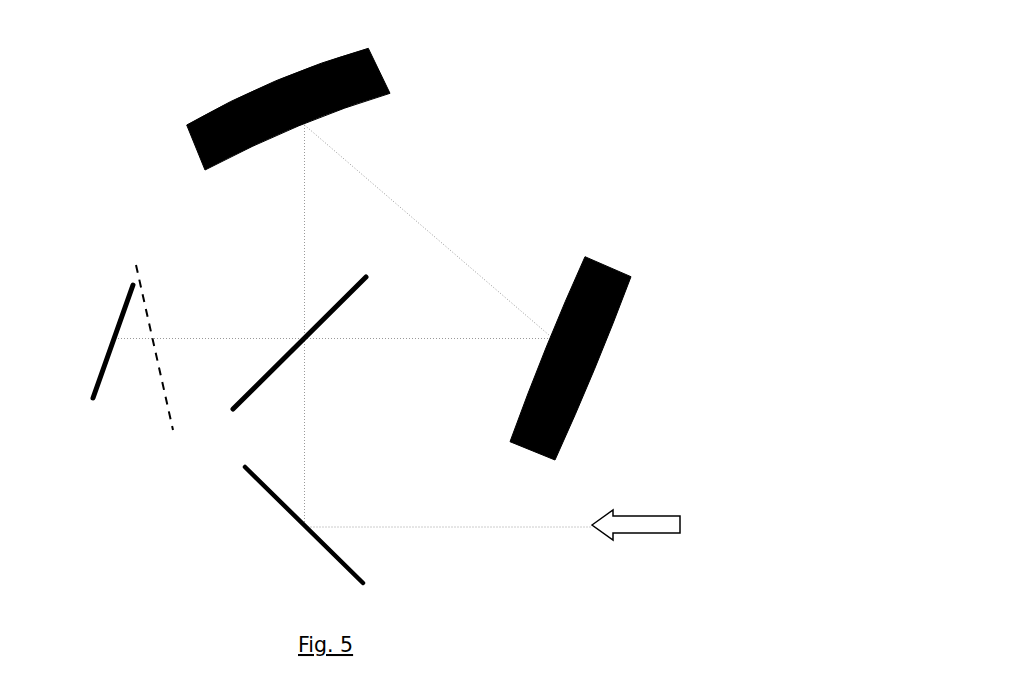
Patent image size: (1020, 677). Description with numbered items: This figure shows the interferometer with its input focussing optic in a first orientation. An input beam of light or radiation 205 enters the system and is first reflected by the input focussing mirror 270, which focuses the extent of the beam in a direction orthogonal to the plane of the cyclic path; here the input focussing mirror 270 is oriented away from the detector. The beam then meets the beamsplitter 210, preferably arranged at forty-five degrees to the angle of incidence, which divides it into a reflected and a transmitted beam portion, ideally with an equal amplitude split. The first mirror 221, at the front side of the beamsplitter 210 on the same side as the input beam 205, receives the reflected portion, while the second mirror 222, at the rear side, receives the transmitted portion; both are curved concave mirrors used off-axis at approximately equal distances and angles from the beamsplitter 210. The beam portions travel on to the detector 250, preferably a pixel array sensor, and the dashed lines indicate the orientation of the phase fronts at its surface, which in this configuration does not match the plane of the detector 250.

The first mirror 221 is at (334, 105).
The second mirror 222 is at (561, 385).
The beamsplitter 210 is at (261, 342).
The detector 250 is at (95, 347).
The input focussing mirror 270 is at (335, 543).
The input beam 205 is at (658, 538).